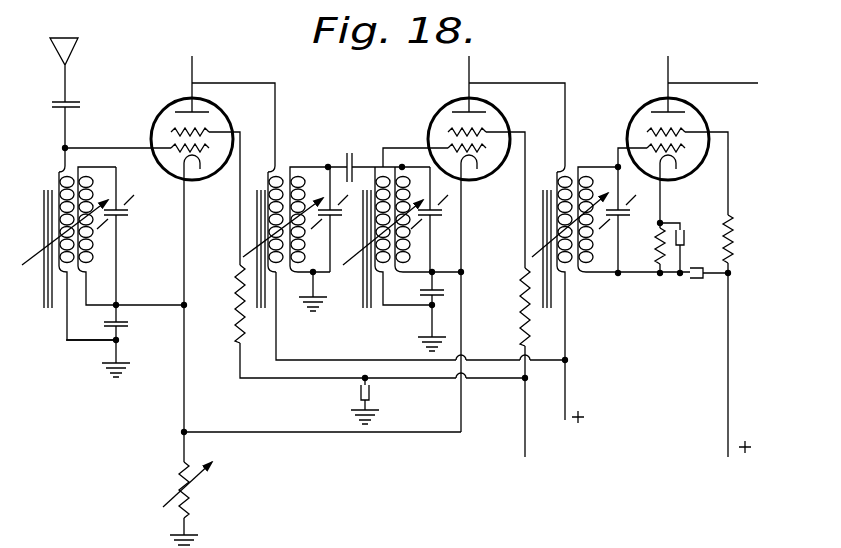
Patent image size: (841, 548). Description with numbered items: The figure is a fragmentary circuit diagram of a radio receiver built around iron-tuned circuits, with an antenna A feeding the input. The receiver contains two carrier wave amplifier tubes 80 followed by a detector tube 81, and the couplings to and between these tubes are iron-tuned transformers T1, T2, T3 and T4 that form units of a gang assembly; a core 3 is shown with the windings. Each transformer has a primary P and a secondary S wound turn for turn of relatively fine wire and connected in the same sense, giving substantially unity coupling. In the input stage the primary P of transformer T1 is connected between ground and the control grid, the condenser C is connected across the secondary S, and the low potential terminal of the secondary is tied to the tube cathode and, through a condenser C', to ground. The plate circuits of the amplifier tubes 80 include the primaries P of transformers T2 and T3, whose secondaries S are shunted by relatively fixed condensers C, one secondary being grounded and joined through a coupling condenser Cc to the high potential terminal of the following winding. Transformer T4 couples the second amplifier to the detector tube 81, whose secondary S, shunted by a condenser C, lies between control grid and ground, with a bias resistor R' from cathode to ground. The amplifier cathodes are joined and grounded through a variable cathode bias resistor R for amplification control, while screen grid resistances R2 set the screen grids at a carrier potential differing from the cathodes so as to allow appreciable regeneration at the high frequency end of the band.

The antenna A is at (70, 52).
The carrier wave amplifier tube 80 is at (158, 116).
The detector tube 81 is at (647, 102).
The input stage transformer T1 is at (103, 244).
The transformer T2 is at (295, 226).
The input transformer of the second carrier amplifier T3 is at (403, 246).
The transformer T4 is at (611, 282).
The primary winding P is at (57, 183).
The secondary winding S is at (342, 219).
The condenser C is at (367, 236).
The condenser C' is at (110, 340).
The coupling condenser Cc is at (347, 166).
The variable cathode bias resistor R is at (190, 490).
The bias resistor R' is at (681, 239).
The screen grid resistance R2 is at (519, 298).
The transformer core 3 is at (262, 312).